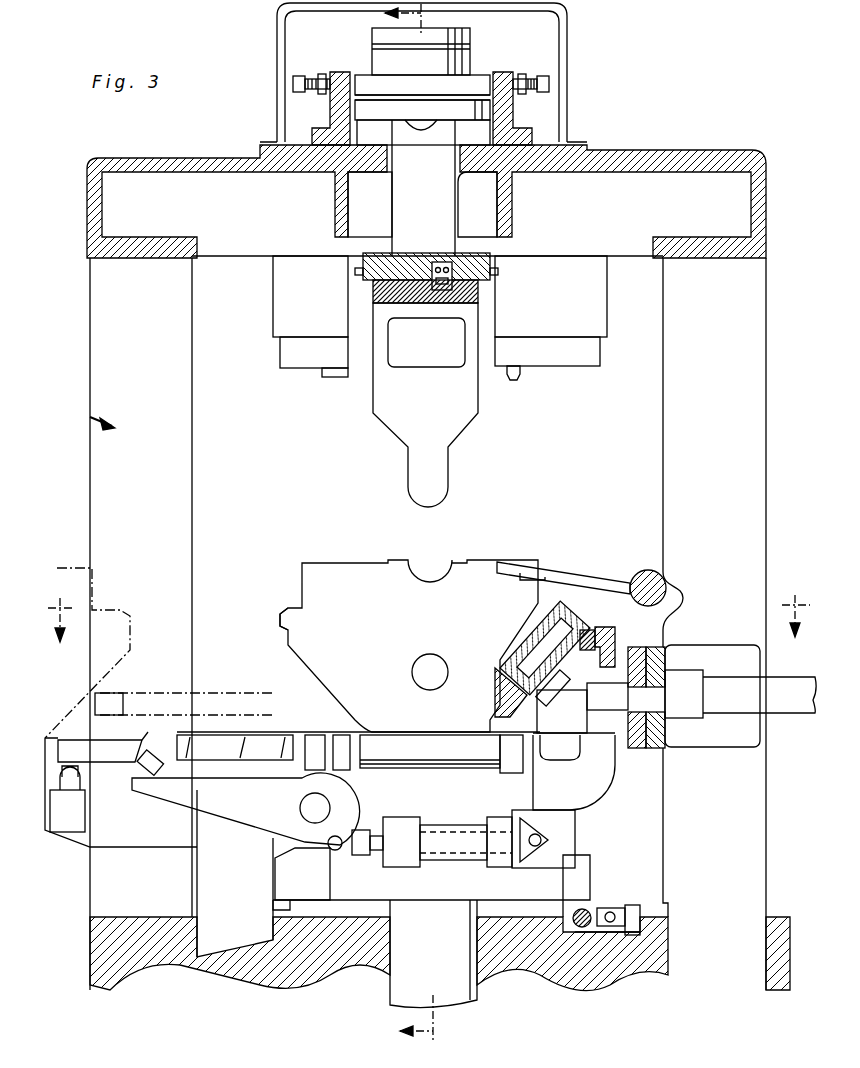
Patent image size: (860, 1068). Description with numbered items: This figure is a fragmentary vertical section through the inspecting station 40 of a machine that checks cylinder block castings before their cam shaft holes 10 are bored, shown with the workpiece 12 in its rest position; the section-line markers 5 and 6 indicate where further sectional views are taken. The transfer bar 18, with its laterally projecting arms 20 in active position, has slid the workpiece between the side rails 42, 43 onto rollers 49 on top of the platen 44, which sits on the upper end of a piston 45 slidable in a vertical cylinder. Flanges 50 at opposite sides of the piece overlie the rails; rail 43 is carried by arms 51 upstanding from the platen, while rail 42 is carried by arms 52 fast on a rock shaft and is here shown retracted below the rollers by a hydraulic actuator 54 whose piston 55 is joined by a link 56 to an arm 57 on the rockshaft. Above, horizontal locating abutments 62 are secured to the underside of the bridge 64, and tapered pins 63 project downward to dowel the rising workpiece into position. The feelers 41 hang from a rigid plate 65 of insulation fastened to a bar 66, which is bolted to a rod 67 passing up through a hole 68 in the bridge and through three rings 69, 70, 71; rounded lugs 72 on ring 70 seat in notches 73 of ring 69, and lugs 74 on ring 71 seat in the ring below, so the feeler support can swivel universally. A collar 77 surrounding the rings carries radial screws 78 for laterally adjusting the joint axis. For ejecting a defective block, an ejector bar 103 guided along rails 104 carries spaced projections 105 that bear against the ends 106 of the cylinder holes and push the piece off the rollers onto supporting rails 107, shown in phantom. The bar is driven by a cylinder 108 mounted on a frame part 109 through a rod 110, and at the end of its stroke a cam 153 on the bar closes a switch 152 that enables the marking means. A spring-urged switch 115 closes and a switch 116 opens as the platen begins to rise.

The section line 5- 5 is at (421, 523).
The section line 6- 6 is at (429, 607).
The cam shaft holes 10 is at (426, 660).
The cylinder block casting 12 is at (358, 574).
The bar 18 is at (645, 570).
The laterally projecting arms 20 is at (570, 578).
The inspecting station 40 is at (90, 417).
The feelers 41 is at (455, 428).
The side rail 42 is at (157, 748).
The side rail 43 is at (596, 634).
The platen 44 is at (590, 885).
The piston 45 is at (388, 1000).
The rollers 49 is at (412, 733).
The flanges 50 is at (284, 624).
The arms 51 is at (614, 780).
The arms 52 is at (240, 812).
The hydraulic actuator 54 is at (447, 860).
The piston 55 is at (480, 818).
The link 56 is at (360, 856).
The arm 57 is at (322, 846).
The locating abutments 62 is at (334, 378).
The tapered pins 63 is at (512, 382).
The bridge 64 is at (700, 158).
The plate 65 is at (478, 298).
The bar 66 is at (490, 270).
The rod 67 is at (392, 218).
The hole 68 is at (477, 203).
The ring 69 is at (370, 204).
The ring 70 is at (340, 112).
The ring 71 is at (365, 80).
The rounded lugs 72 is at (415, 124).
The notches 73 is at (424, 128).
The lugs 74 is at (490, 108).
The collar 77 is at (503, 80).
The screws 78 is at (311, 76).
The ejector bar 103 is at (596, 738).
The rails 104 is at (278, 738).
The projections 105 is at (552, 680).
The ends of cylinder holes 106 is at (545, 698).
The rails 107 is at (138, 735).
The cylinder 108 is at (792, 713).
The part of the inspecting machine frame 109 is at (662, 650).
The rod 110 is at (145, 693).
The switch 115 is at (630, 895).
The switch 116 is at (632, 912).
The switch 152 is at (70, 832).
The cam 153 is at (70, 745).